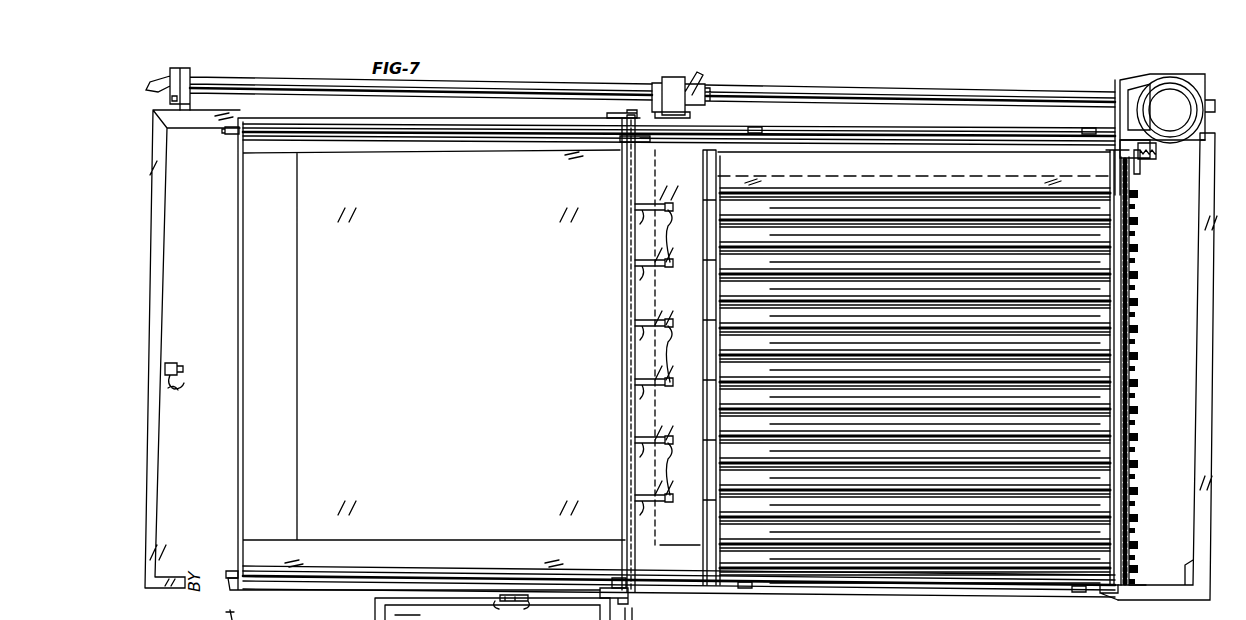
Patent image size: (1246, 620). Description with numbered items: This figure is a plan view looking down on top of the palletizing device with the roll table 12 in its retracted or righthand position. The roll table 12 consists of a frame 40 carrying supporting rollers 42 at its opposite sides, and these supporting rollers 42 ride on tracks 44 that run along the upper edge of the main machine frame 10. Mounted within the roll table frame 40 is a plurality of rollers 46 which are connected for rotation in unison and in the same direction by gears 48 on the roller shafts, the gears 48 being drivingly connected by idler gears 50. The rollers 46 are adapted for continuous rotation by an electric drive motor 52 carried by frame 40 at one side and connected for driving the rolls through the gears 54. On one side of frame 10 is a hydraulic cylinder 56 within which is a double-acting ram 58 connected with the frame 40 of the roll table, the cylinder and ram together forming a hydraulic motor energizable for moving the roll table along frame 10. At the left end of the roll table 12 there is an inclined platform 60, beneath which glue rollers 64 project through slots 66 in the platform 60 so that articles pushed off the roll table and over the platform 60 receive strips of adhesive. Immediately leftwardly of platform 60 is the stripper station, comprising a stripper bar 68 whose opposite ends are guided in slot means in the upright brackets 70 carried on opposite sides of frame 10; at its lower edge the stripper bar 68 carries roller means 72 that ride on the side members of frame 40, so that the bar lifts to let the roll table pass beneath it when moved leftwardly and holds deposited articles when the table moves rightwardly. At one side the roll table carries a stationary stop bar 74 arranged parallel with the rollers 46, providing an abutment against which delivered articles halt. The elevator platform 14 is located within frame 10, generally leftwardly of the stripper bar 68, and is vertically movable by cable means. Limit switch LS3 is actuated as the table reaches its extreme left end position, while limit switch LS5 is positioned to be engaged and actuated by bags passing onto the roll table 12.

The frame 10 is at (1198, 526).
The roll table 12 is at (1152, 311).
The elevator platform 14 is at (420, 422).
The roll table frame 40 is at (1100, 592).
The supporting rollers 42 is at (762, 129).
The tracks 44 is at (832, 128).
The rollers 46 is at (1095, 274).
The gears 48 is at (1142, 299).
The idler gears 50 is at (1138, 207).
The electric drive motor 52 is at (1180, 96).
The gears 54 is at (1150, 166).
The hydraulic cylinder 56 is at (578, 89).
The double-acting ram 58 is at (754, 93).
The inclined platform 60 is at (627, 351).
The glue rollers 64 is at (681, 221).
The slots 66 is at (640, 203).
The stripper bar 68 is at (626, 401).
The upright brackets 70 is at (618, 113).
The roller means 72 is at (647, 140).
The stationary stop bar 74 is at (990, 190).
The limit switch LS3 is at (170, 361).
The limit switch LS5 is at (539, 603).